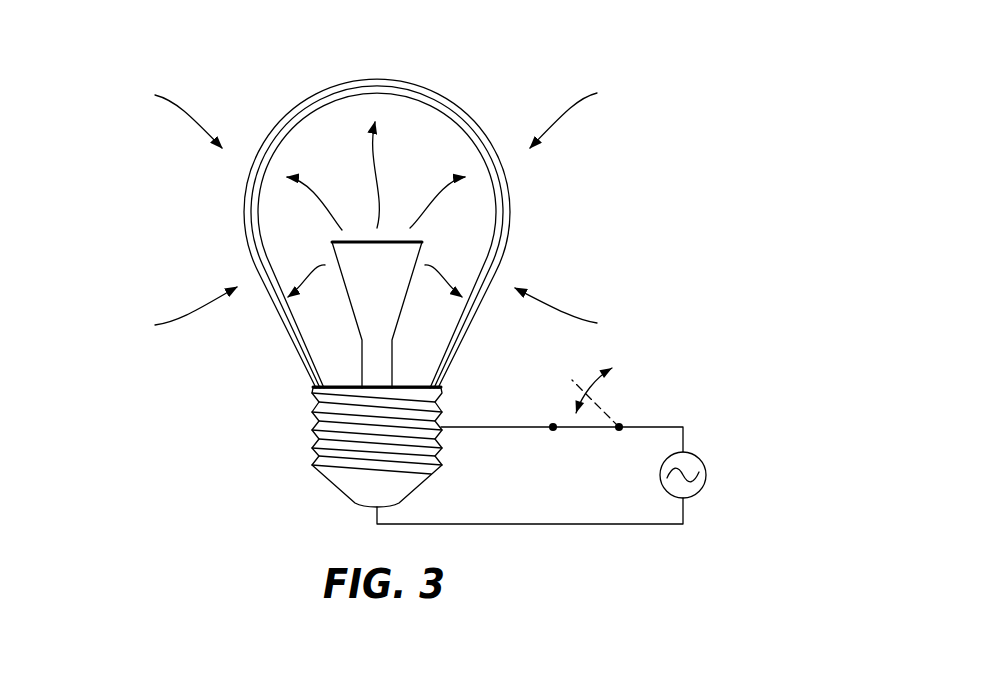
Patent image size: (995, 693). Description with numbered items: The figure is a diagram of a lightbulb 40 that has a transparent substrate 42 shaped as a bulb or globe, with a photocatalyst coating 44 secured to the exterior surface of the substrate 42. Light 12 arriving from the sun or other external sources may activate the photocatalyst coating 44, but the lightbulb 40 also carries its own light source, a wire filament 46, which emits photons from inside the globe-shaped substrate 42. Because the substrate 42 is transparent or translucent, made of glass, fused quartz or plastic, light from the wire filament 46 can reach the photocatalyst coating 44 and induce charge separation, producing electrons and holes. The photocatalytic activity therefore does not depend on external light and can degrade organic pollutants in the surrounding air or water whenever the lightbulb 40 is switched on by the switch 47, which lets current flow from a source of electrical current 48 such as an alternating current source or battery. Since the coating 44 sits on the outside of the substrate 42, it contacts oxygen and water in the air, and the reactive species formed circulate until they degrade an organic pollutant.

The lightbulb 40 is at (122, 148).
The light 12 is at (182, 118).
The transparent substrate 42 is at (459, 125).
The photocatalyst coating 44 is at (248, 197).
The wire filament 46 is at (377, 246).
The switch 47 is at (627, 392).
The source of electrical current 48 is at (697, 455).